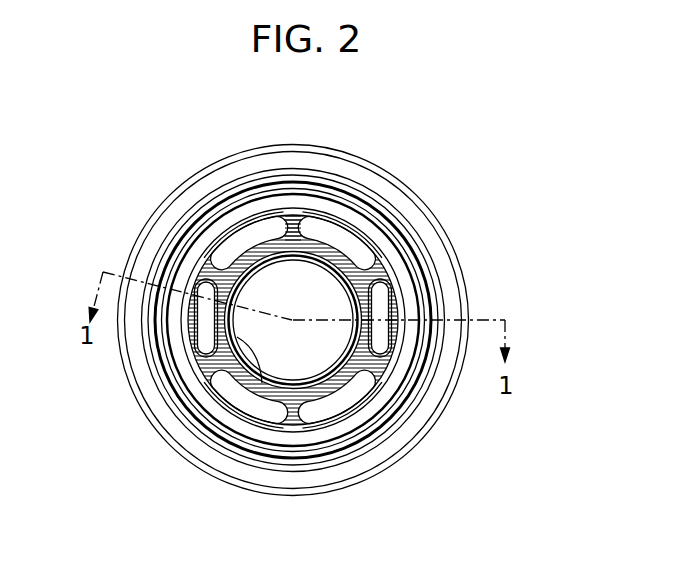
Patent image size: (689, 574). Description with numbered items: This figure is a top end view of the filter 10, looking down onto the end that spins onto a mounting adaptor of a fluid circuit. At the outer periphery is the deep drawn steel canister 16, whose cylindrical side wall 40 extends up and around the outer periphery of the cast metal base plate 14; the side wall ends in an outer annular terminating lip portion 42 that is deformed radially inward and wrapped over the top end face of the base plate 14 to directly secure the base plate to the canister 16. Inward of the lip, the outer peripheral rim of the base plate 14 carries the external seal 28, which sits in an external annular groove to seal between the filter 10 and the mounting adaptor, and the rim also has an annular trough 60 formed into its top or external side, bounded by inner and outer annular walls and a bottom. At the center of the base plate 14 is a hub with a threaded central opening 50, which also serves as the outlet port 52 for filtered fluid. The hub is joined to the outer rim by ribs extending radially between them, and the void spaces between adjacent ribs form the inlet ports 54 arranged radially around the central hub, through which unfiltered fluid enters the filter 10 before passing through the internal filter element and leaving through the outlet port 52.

The filter 10 is at (494, 225).
The base plate 14 is at (293, 223).
The canister 16 is at (442, 192).
The external seal 28 is at (440, 390).
The cylindrical side wall 40 is at (402, 182).
The terminating lip portion 42 is at (398, 445).
The threaded central opening 50 is at (265, 353).
The outlet port 52 is at (287, 355).
The inlet ports 54 is at (247, 237).
The annular trough 60 is at (348, 440).